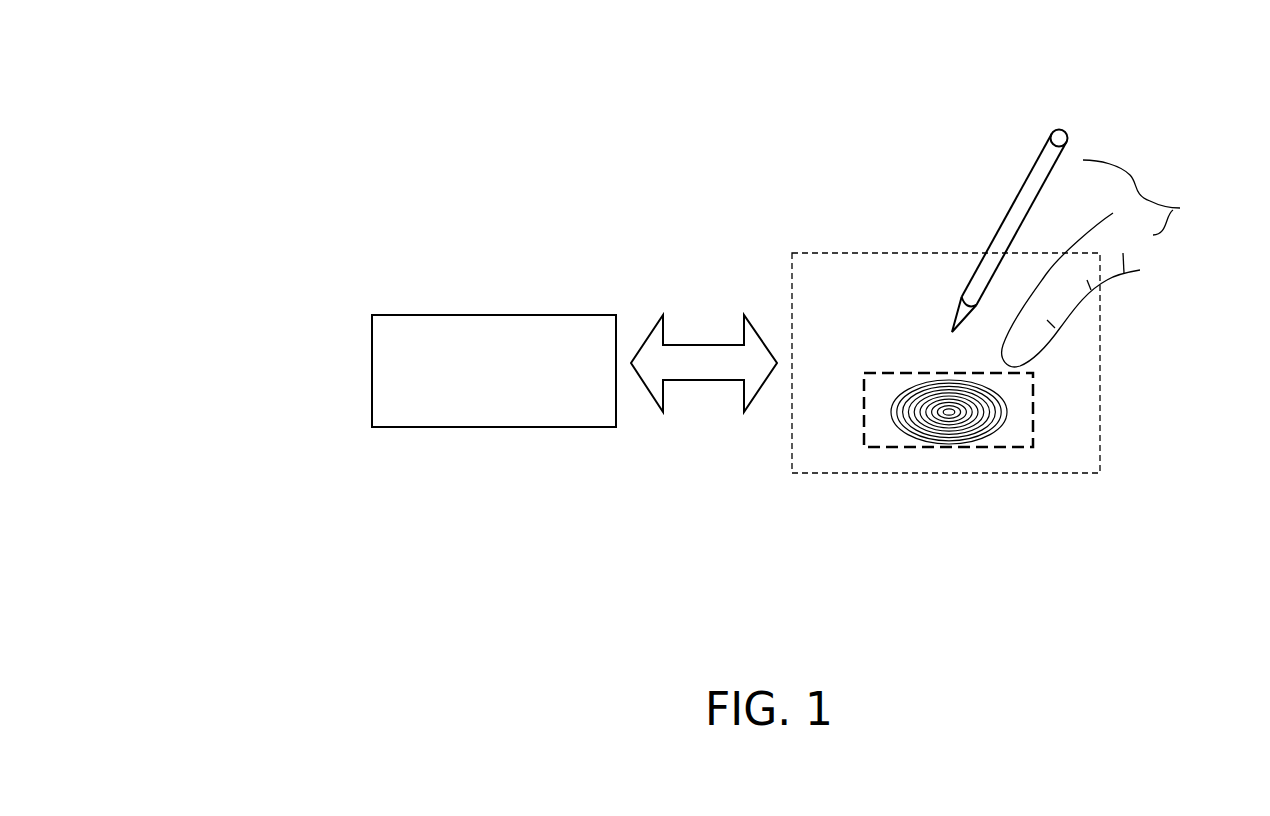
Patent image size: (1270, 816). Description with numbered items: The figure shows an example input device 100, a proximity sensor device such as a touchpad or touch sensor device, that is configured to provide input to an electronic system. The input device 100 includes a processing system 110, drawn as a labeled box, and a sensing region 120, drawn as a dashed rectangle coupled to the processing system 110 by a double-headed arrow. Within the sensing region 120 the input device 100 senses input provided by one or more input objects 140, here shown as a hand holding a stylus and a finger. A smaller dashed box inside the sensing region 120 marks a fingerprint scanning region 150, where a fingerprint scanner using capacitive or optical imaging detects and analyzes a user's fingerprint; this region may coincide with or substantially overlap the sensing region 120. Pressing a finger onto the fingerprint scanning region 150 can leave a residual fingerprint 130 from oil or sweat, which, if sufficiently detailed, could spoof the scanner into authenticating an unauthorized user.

The input device 100 is at (257, 113).
The processing system 110 is at (372, 352).
The sensing region 120 is at (1100, 381).
The residual fingerprint 130 is at (945, 437).
The input objects 140 is at (1178, 208).
The fingerprint scanning region 150 is at (1033, 431).